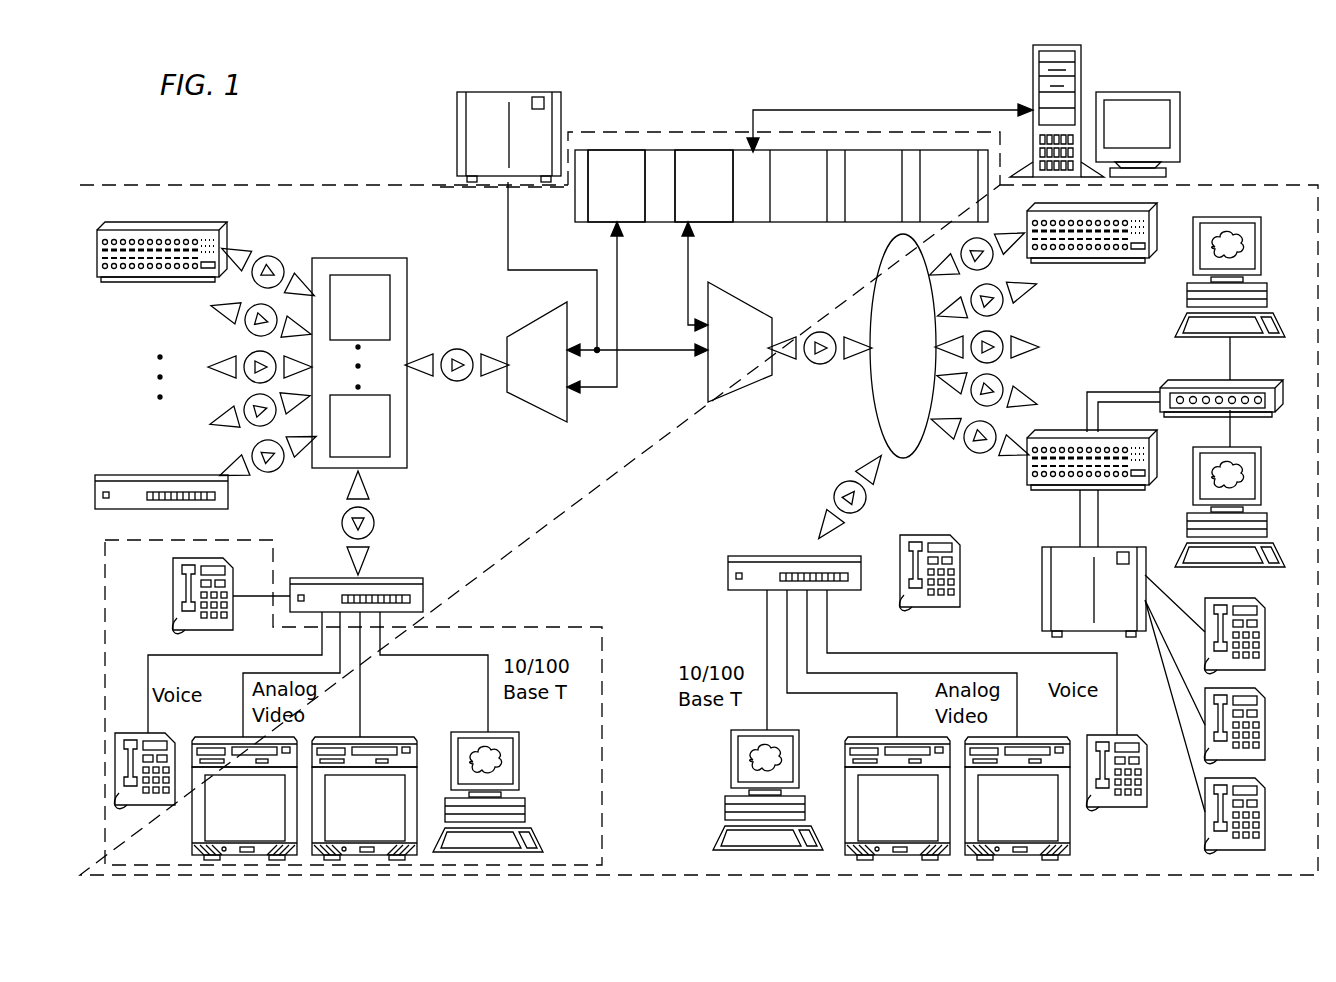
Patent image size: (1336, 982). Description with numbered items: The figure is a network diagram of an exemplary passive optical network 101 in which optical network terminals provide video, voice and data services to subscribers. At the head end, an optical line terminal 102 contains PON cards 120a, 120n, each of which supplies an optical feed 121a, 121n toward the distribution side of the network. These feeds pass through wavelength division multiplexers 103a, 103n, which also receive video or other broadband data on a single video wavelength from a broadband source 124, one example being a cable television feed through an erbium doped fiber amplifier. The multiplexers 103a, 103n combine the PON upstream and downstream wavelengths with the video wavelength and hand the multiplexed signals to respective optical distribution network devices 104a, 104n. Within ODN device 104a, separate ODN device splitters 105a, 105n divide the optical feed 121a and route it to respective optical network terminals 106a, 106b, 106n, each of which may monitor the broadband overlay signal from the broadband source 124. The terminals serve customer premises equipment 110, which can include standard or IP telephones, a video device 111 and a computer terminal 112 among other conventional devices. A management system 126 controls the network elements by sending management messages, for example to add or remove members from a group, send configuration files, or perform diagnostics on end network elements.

The passive optical network 101 is at (238, 185).
The optical line terminal 102 is at (670, 152).
The wavelength division multiplexer 103a is at (522, 400).
The wavelength division multiplexer 103n is at (740, 392).
The optical distribution network device 104a is at (378, 258).
The optical distribution network device 104n is at (915, 452).
The ODN device splitter 105a is at (360, 307).
The ODN device splitter 105n is at (360, 426).
The optical network terminal 106a is at (423, 590).
The optical network terminal 106b is at (140, 475).
The optical network terminal 106n is at (143, 282).
The customer premises equipment 110 is at (584, 627).
The video device 111 is at (244, 798).
The computer terminal 112 is at (521, 755).
The PON card 120a is at (630, 222).
The PON card 120n is at (728, 222).
The optical feed 121a is at (597, 392).
The optical feed 121n is at (688, 322).
The broadband source 124 is at (457, 118).
The management system 126 is at (1182, 118).